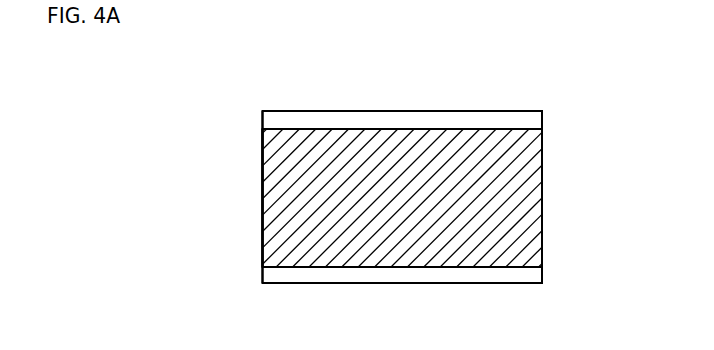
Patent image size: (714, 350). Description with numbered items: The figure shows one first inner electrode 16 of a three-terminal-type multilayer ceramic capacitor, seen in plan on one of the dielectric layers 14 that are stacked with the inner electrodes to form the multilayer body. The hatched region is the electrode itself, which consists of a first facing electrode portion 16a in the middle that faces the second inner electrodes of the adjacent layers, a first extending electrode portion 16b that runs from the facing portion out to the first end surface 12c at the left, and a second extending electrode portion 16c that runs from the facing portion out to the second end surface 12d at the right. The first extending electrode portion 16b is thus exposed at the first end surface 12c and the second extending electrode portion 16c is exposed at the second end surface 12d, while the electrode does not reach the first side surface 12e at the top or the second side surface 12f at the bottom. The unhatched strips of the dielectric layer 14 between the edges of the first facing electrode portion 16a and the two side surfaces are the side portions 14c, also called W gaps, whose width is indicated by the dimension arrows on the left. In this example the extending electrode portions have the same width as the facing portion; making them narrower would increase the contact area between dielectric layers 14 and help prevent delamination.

The first end surface 12c is at (262, 178).
The second end surface 12d is at (543, 243).
The first side surface 12e is at (487, 111).
The second side surface 12f is at (445, 283).
The dielectric layer 14 is at (523, 118).
The side portion 14c is at (257, 111).
The first inner electrode 16 is at (278, 73).
The first facing electrode portion 16a is at (403, 150).
The first extending electrode portion 16b is at (268, 216).
The second extending electrode portion 16c is at (530, 193).